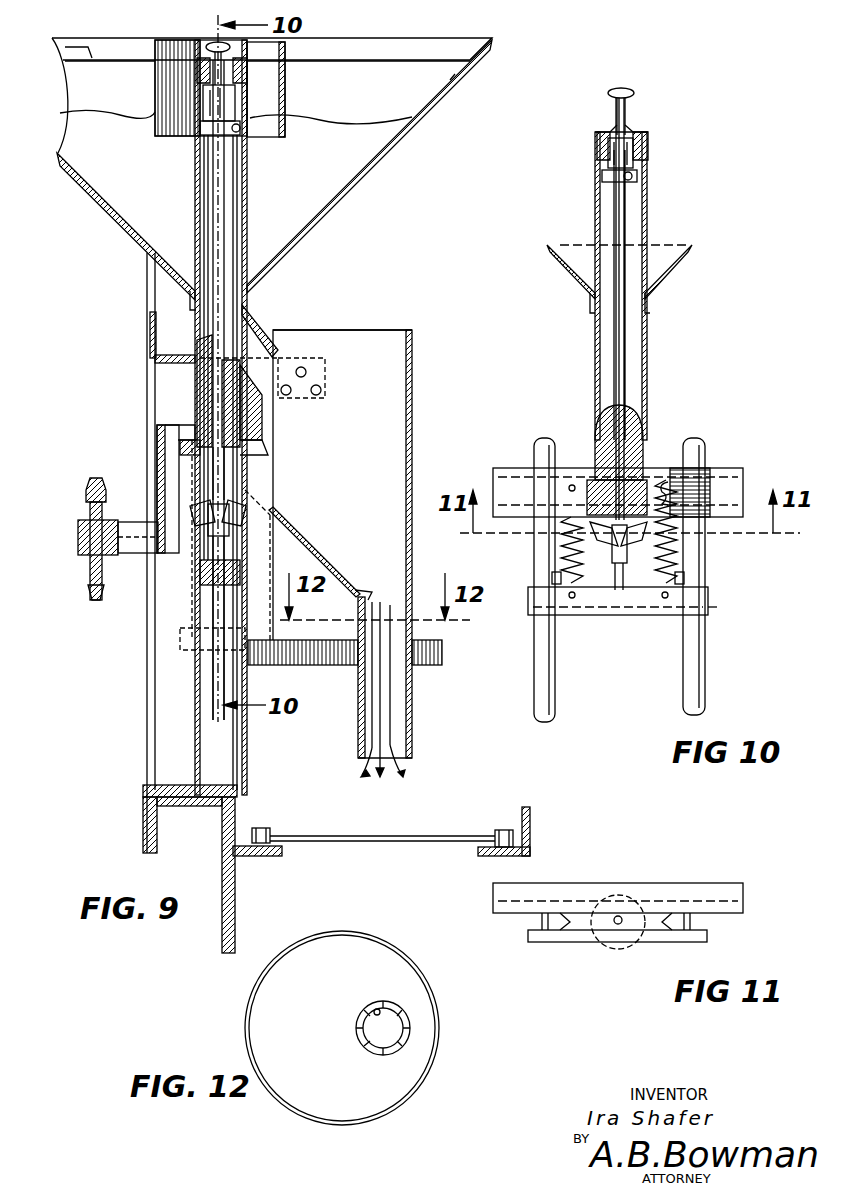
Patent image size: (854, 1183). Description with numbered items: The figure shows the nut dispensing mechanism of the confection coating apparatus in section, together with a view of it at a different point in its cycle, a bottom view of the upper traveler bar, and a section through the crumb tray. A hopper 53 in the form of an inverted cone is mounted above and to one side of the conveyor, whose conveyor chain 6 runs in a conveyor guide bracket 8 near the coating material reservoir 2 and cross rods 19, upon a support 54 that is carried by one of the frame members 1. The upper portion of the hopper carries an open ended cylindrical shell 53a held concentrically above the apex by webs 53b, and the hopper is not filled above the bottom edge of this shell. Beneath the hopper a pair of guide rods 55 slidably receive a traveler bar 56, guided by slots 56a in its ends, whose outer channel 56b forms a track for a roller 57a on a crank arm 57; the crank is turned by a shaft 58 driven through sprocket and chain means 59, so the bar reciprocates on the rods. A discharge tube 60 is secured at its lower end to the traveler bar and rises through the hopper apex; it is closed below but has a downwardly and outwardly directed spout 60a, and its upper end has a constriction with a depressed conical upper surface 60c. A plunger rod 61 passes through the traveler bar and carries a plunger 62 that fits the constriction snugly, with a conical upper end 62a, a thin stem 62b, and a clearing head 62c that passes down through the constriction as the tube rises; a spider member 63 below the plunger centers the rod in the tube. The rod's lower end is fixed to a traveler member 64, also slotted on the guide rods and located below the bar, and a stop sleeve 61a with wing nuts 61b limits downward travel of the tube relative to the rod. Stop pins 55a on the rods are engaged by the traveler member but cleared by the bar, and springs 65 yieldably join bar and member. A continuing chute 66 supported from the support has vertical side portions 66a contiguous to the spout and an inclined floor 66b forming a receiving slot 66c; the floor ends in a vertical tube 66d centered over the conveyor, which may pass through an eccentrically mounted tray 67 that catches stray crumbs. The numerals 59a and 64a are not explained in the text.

In FIG. 9, the frame members 1 is at (192, 806).
In FIG. 9, the coating material reservoir 2 is at (236, 900).
In FIG. 9, the conveyor chain 6 is at (270, 822).
In FIG. 9, the conveyor guide bracket 8 is at (247, 856).
In FIG. 9, the cross rods 19 is at (333, 836).
In FIG. 9, the hopper 53 is at (328, 204).
In FIG. 10, the hopper 53 is at (568, 250).
In FIG. 9, the cylindrical shell 53a is at (300, 62).
In FIG. 9, the webs 53b is at (455, 76).
In FIG. 9, the support 54 is at (150, 370).
In FIG. 9, the guide rods 55 is at (232, 688).
In FIG. 10, the guide rods 55 is at (543, 442).
In FIG. 10, the stop pins 55a is at (553, 577).
In FIG. 9, the traveler bar 56 is at (270, 400).
In FIG. 10, the traveler bar 56 is at (588, 480).
In FIG. 11, the traveler bar 56 is at (621, 918).
In FIG. 11, the slots 56a is at (687, 920).
In FIG. 9, the channel 56b is at (180, 450).
In FIG. 11, the channel 56b is at (585, 868).
In FIG. 9, the crank arm 57 is at (177, 470).
In FIG. 9, the roller 57a is at (183, 435).
In FIG. 9, the shaft 58 is at (80, 535).
In FIG. 9, the sprocket and chain means 59 is at (90, 500).
In FIG. 9, the pipe connection 59a is at (140, 545).
In FIG. 9, the discharge tube 60 is at (248, 216).
In FIG. 10, the discharge tube 60 is at (600, 368).
In FIG. 9, the spout 60a is at (254, 355).
In FIG. 9, the conical upper surface 60c is at (240, 58).
In FIG. 10, the conical upper surface 60c is at (640, 133).
In FIG. 10, the plunger rod 61 is at (628, 372).
In FIG. 9, the stop sleeve 61a is at (236, 472).
In FIG. 10, the stop sleeve 61a is at (622, 508).
In FIG. 9, the wing nuts 61b is at (322, 555).
In FIG. 10, the wing nuts 61b is at (598, 540).
In FIG. 9, the plunger 62 is at (217, 105).
In FIG. 10, the plunger 62 is at (620, 155).
In FIG. 10, the upper end of plunger 62a is at (627, 130).
In FIG. 10, the stem 62b is at (617, 98).
In FIG. 9, the clearing head 62c is at (207, 43).
In FIG. 10, the clearing head 62c is at (625, 87).
In FIG. 9, the spider member 63 is at (228, 134).
In FIG. 10, the spider member 63 is at (627, 182).
In FIG. 10, the traveler member 64 is at (552, 597).
In FIG. 10, the bar extension 64a is at (710, 610).
In FIG. 10, the springs 65 is at (558, 533).
In FIG. 9, the continuing chute 66 is at (388, 420).
In FIG. 9, the side portions 66a is at (376, 326).
In FIG. 9, the inclined floor 66b is at (249, 78).
In FIG. 9, the receiving slot 66c is at (265, 455).
In FIG. 9, the tube 66d is at (392, 648).
In FIG. 12, the tube 66d is at (378, 1011).
In FIG. 9, the tray 67 is at (331, 660).
In FIG. 12, the tray 67 is at (323, 950).